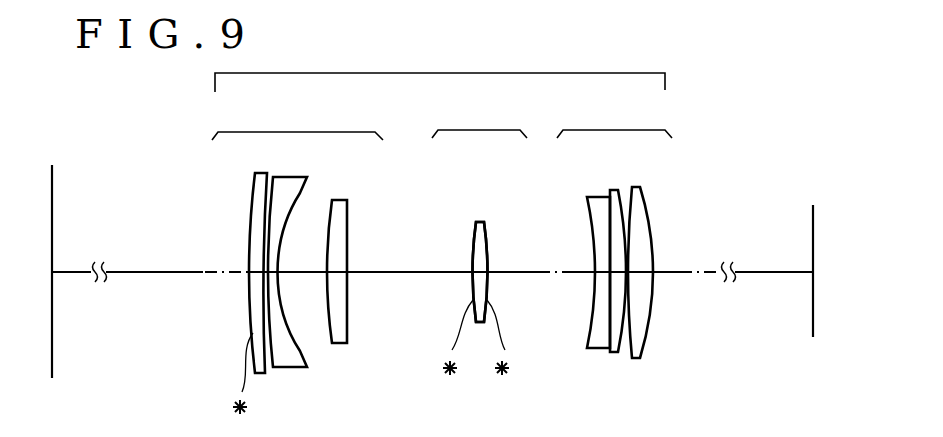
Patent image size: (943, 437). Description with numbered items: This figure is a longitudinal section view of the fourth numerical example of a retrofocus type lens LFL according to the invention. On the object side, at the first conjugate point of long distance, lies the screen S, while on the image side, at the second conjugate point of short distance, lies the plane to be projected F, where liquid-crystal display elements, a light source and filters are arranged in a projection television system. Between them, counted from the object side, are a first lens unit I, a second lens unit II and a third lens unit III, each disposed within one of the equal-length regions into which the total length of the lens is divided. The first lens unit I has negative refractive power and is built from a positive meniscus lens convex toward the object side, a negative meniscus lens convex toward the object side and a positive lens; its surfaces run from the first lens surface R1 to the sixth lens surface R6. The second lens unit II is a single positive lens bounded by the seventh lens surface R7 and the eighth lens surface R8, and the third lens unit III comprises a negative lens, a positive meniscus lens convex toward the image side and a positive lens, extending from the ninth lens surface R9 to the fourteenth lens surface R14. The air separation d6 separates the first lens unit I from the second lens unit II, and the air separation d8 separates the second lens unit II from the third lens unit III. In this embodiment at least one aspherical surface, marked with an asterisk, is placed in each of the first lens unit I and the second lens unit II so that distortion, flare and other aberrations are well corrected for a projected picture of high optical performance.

The screen S is at (52, 187).
The plane to be projected F is at (813, 228).
The retrofocus type lens LFL is at (440, 68).
The first lens unit I is at (297, 234).
The second lens unit II is at (479, 119).
The third lens unit III is at (614, 226).
The first lens surface R1 is at (250, 222).
The sixth lens surface R6 is at (348, 226).
The seventh lens surface R7 is at (474, 236).
The eighth lens surface R8 is at (489, 236).
The ninth lens surface R9 is at (593, 235).
The fourteenth lens surface R14 is at (648, 236).
The sixth air separation d6 is at (473, 273).
The eighth air separation d8 is at (594, 273).